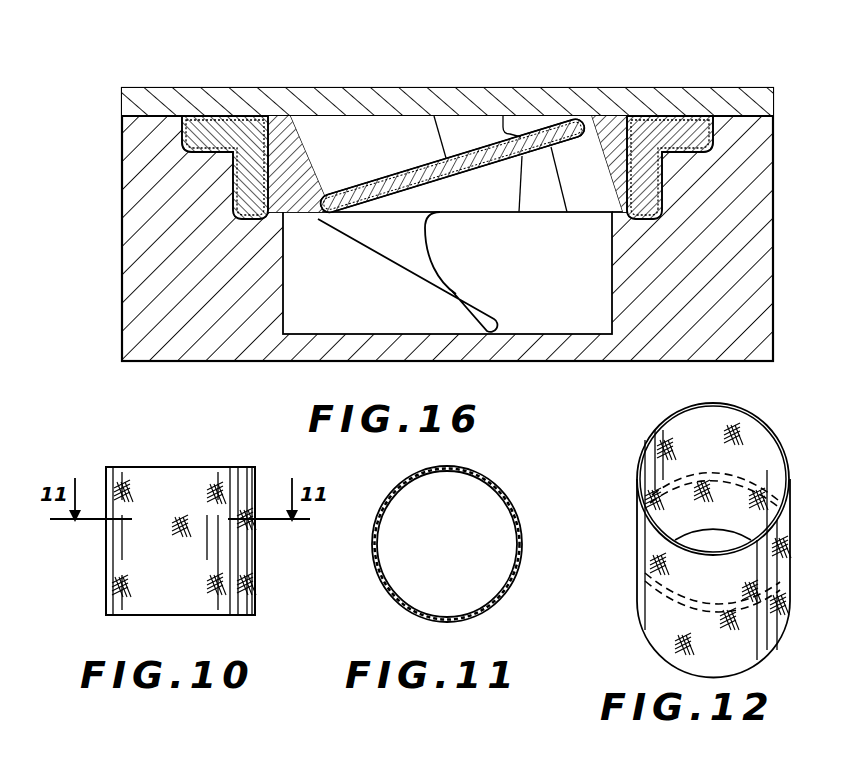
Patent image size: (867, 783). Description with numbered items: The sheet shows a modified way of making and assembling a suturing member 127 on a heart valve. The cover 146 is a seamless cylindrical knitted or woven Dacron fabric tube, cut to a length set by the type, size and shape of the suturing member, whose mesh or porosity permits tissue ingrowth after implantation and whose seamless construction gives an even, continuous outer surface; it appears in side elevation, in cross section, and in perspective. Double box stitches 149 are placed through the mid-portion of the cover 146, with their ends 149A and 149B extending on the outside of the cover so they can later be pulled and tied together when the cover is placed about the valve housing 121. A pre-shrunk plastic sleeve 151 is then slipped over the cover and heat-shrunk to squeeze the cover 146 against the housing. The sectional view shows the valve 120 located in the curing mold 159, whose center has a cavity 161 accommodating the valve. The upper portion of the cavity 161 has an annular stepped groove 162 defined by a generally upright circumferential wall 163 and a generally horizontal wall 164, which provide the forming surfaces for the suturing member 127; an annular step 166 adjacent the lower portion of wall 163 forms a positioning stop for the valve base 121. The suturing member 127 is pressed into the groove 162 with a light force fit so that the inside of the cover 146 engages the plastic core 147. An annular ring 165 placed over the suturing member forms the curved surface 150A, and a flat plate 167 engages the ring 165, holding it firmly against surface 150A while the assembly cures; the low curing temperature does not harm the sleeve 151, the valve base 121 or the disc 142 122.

In FIG. 16, the valve 120 is at (452, 125).
In FIG. 16, the valve housing 121 is at (338, 150).
In FIG. 16, the disc 122 is at (527, 126).
In FIG. 16, the suturing member 127 is at (222, 130).
In FIG. 16, the link 142 is at (453, 292).
In FIG. 16, the cover 146 is at (690, 141).
In FIG. 10, the cover 146 is at (192, 478).
In FIG. 11, the cover 146 is at (486, 478).
In FIG. 12, the cover 146 is at (695, 536).
In FIG. 16, the plastic core 147 is at (670, 120).
In FIG. 12, the double box stitches 149 is at (660, 563).
In FIG. 12, the stitch end 149A is at (640, 543).
In FIG. 12, the stitch end 149B is at (615, 577).
In FIG. 16, the curved surface 150A is at (706, 118).
In FIG. 16, the sleeve 151 is at (655, 174).
In FIG. 16, the curing mold 159 is at (140, 273).
In FIG. 16, the cavity 161 is at (446, 273).
In FIG. 16, the annular stepped groove 162 is at (211, 128).
In FIG. 16, the upright circumferential wall 163 is at (235, 180).
In FIG. 16, the horizontal wall 164 is at (203, 157).
In FIG. 16, the ring 165 is at (169, 134).
In FIG. 16, the annular step 166 is at (640, 214).
In FIG. 16, the plate 167 is at (618, 98).